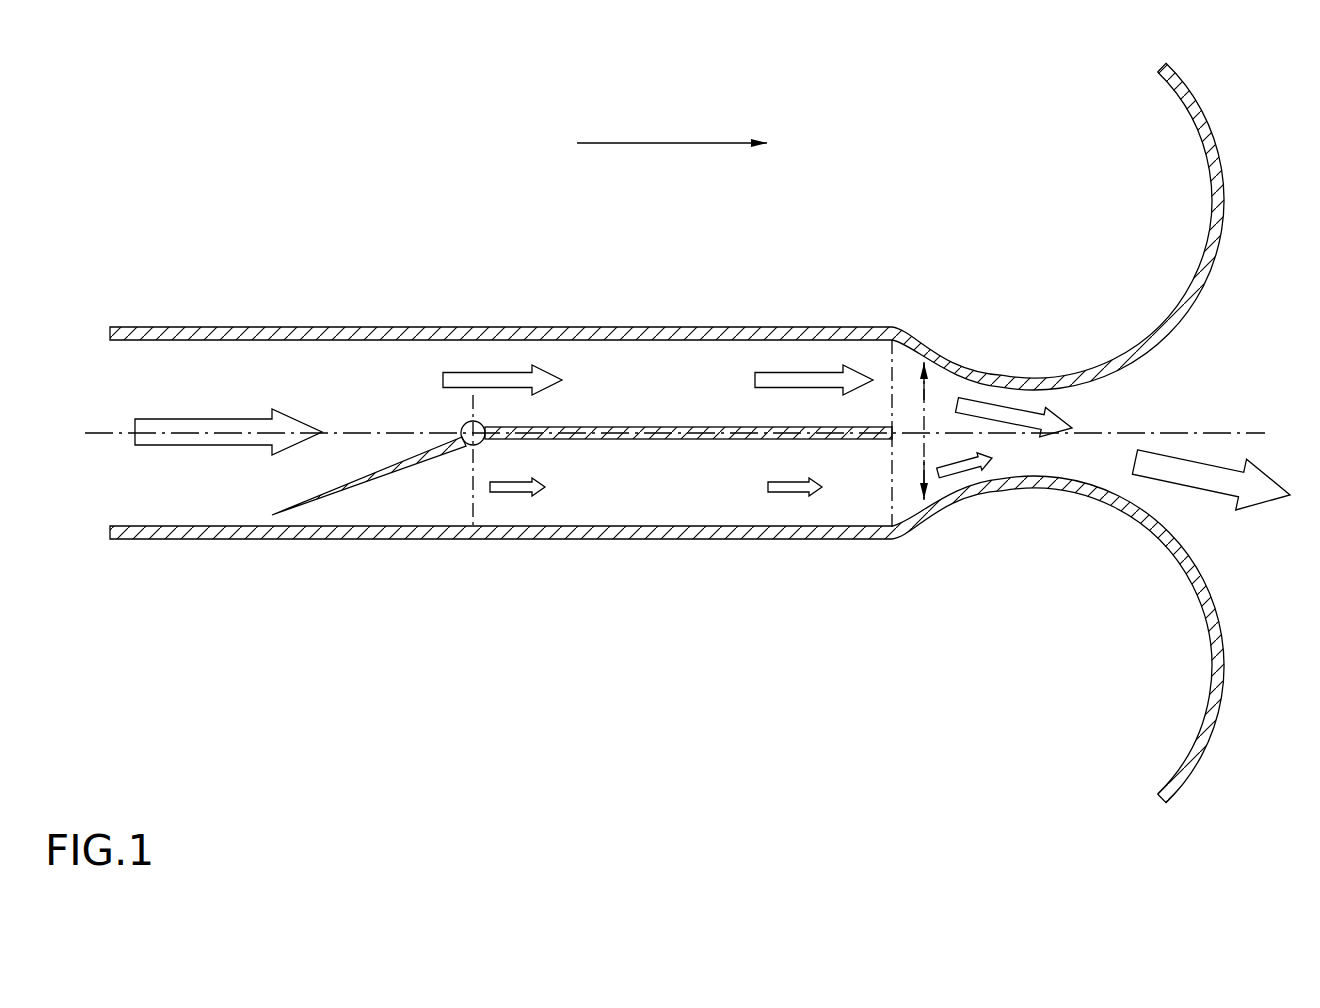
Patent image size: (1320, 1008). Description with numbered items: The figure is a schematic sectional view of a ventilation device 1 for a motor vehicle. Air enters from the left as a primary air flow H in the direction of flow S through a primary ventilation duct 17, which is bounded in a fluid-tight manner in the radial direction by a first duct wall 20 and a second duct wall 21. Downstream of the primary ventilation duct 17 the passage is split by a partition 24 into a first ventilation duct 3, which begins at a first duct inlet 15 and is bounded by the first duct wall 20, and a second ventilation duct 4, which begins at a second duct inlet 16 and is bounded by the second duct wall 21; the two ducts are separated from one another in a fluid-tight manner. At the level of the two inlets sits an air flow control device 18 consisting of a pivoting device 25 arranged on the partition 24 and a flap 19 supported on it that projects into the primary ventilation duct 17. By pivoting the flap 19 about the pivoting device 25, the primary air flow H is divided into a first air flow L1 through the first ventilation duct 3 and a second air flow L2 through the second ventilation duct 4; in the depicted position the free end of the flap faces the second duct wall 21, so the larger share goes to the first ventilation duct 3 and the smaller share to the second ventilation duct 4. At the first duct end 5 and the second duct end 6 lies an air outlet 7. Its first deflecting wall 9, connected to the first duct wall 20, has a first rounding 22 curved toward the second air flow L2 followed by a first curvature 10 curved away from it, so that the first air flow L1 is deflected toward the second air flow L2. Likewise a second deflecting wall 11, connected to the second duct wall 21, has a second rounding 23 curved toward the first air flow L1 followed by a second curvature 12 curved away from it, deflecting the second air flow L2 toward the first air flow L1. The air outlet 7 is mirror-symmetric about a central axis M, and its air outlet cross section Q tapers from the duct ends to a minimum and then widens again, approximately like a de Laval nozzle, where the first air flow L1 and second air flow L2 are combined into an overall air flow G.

The ventilation device 1 is at (473, 157).
The first ventilation duct 3 is at (668, 375).
The second ventilation duct 4 is at (611, 497).
The first duct end 5 is at (886, 380).
The second duct end 6 is at (888, 486).
The air outlet 7 is at (1088, 226).
The first deflecting wall 9 is at (953, 370).
The first curvature 10 is at (1088, 226).
The second deflecting wall 11 is at (999, 485).
The second curvature 12 is at (1111, 639).
The first duct inlet 15 is at (474, 370).
The second duct inlet 16 is at (474, 511).
The primary ventilation duct 17 is at (200, 503).
The air flow control device 18 is at (393, 378).
The flap 19 is at (337, 488).
The first duct wall 20 is at (558, 333).
The second duct wall 21 is at (696, 533).
The first rounding 22 is at (906, 325).
The second rounding 23 is at (910, 541).
The partition 24 is at (575, 433).
The pivoting device 25 is at (473, 436).
The primary air flow H is at (198, 415).
The direction of flow S is at (675, 143).
The first air flow L1 is at (792, 370).
The second air flow L2 is at (788, 494).
The overall air flow G is at (1188, 434).
The central axis M is at (1252, 435).
The air outlet cross section Q is at (924, 448).